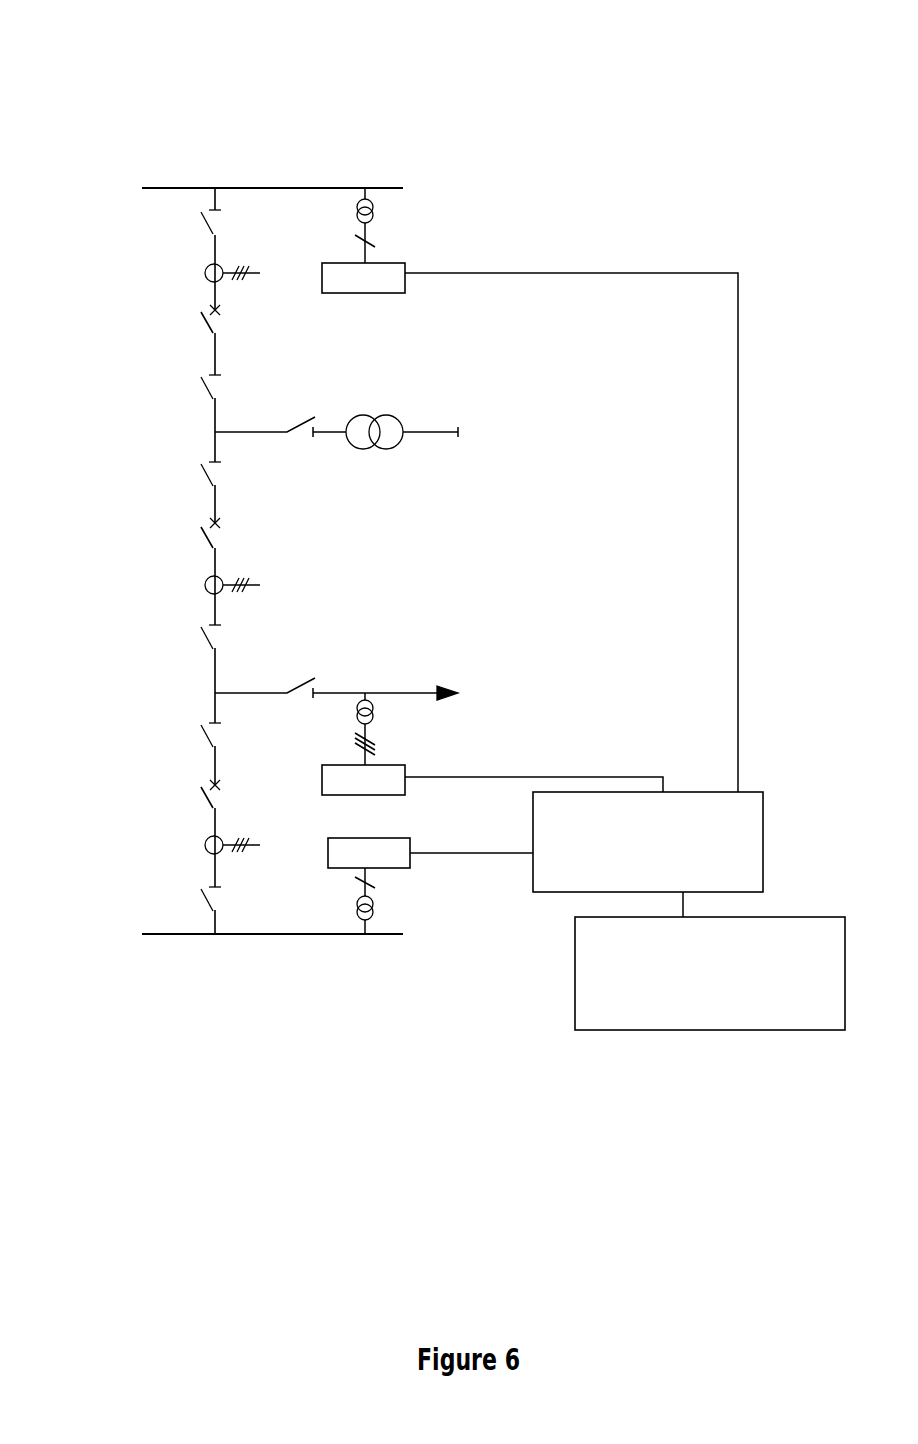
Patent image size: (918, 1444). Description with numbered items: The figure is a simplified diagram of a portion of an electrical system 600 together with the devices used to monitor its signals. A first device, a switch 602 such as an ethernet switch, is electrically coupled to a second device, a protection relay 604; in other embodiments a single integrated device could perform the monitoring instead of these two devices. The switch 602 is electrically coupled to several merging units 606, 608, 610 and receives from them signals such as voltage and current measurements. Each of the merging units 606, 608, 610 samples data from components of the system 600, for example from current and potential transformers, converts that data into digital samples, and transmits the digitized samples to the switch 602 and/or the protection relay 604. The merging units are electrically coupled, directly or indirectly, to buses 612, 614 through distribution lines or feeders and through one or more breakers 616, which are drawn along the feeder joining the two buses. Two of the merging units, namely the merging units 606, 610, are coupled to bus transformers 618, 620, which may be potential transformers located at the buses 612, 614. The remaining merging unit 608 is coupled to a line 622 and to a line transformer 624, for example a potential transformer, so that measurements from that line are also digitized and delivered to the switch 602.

The electrical system 600 is at (76, 60).
The switch 602 is at (631, 852).
The protection relay 604 is at (693, 984).
The merging unit 606 is at (400, 263).
The merging unit 608 is at (395, 765).
The merging unit 610 is at (398, 838).
The bus 612 is at (183, 190).
The bus 614 is at (231, 936).
The breaker 616 is at (202, 332).
The bus transformer 618 is at (368, 186).
The bus transformer 620 is at (375, 908).
The line 622 is at (390, 691).
The line transformer 624 is at (353, 722).